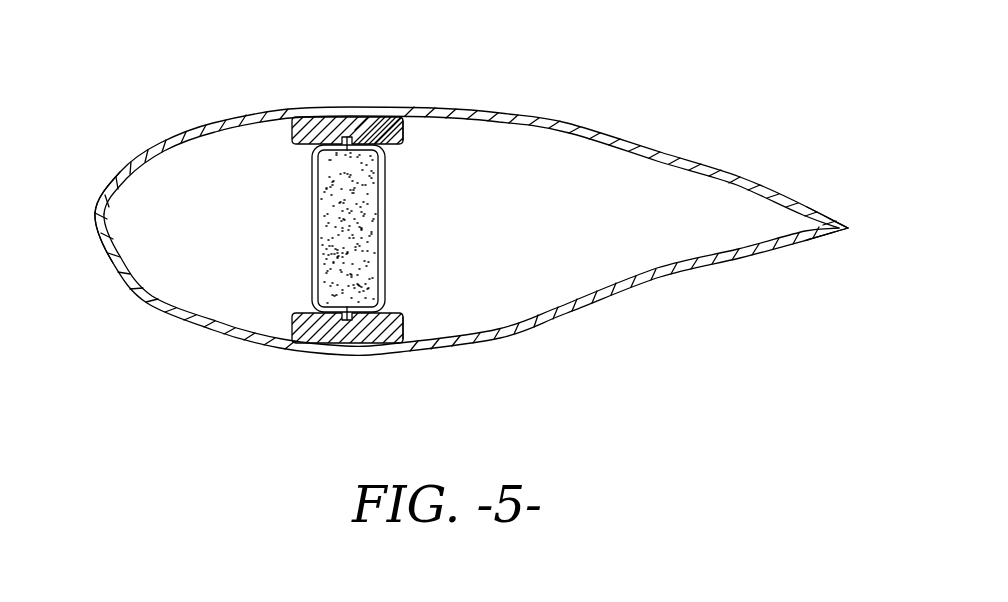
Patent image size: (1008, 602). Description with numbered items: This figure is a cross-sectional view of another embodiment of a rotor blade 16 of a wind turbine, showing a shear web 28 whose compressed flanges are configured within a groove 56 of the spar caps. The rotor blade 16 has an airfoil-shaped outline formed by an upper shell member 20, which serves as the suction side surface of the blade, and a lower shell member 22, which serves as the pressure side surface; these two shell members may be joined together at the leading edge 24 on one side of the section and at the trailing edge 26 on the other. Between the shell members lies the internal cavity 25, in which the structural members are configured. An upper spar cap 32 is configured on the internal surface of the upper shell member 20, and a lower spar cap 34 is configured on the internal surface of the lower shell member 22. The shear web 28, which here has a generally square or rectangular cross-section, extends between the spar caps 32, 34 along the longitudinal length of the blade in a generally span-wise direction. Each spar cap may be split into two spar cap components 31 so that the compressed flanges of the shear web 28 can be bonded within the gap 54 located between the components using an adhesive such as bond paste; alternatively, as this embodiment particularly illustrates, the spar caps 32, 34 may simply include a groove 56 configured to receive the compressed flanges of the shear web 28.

The rotor blade 16 is at (723, 93).
The upper shell member 20 is at (565, 123).
The lower shell member 22 is at (543, 327).
The leading edge 24 is at (93, 218).
The internal cavity 25 is at (558, 236).
The trailing edge 26 is at (847, 229).
The shear web 28 is at (291, 227).
The spar cap component 31 is at (392, 146).
The upper spar cap 32 is at (422, 130).
The lower spar cap 34 is at (415, 320).
The gap 54 is at (345, 114).
The groove 56 is at (375, 118).